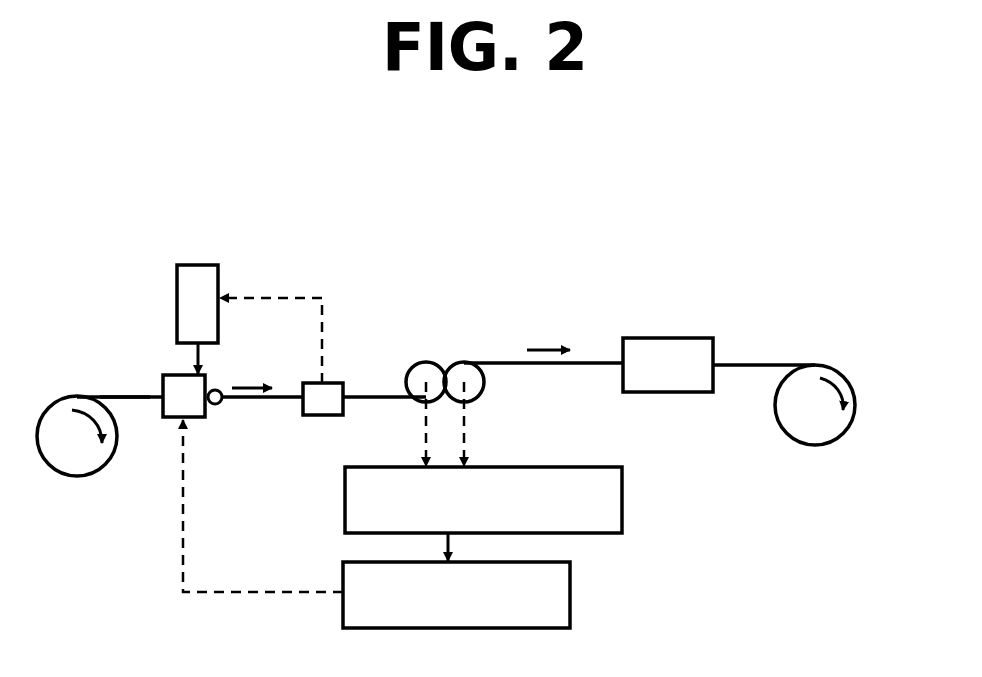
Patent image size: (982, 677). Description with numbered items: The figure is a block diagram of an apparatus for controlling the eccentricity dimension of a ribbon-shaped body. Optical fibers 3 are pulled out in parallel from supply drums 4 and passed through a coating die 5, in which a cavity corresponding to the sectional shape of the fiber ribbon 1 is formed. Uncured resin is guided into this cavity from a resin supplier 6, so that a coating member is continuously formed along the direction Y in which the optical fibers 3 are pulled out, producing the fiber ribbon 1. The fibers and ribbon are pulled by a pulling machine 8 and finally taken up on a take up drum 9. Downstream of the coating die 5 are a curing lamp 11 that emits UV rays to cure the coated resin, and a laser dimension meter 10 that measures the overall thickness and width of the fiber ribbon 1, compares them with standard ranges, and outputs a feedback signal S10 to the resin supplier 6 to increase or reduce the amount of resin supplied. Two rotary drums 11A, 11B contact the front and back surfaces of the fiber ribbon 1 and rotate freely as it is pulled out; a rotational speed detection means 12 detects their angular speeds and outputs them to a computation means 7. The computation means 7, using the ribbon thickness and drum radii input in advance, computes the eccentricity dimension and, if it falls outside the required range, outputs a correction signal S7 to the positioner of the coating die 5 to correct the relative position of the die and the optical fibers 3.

The fiber ribbon 1 is at (257, 400).
The optical fibers 3 is at (127, 393).
The supply drums 4 is at (67, 470).
The coating die 5 is at (193, 407).
The resin supplier 6 is at (177, 293).
The computation means 7 is at (563, 588).
The pulling machine 8 is at (682, 347).
The take up drum 9 is at (820, 443).
The laser dimension meter 10 is at (318, 405).
The curing lamp 11 is at (218, 390).
The rotary drum 11A is at (425, 362).
The rotary drum 11B is at (468, 363).
The rotational speed detection means 12 is at (620, 488).
The correction signal S7 is at (263, 506).
The feedback signal S10 is at (271, 322).
The direction Y is at (252, 369).